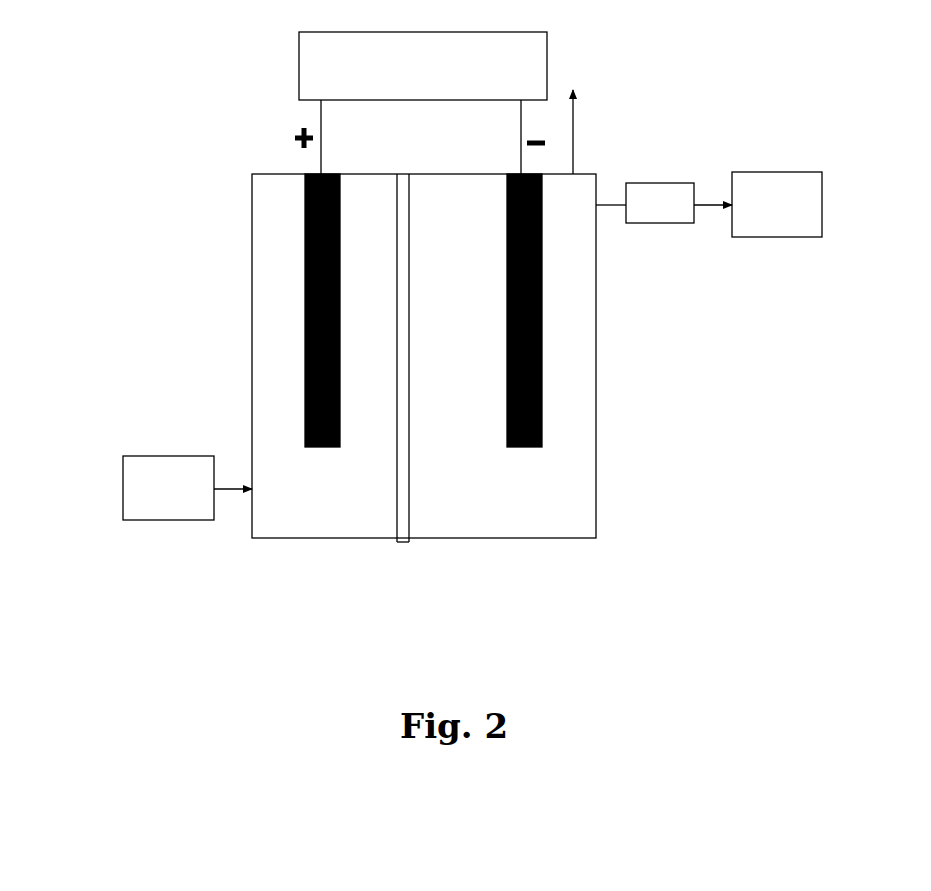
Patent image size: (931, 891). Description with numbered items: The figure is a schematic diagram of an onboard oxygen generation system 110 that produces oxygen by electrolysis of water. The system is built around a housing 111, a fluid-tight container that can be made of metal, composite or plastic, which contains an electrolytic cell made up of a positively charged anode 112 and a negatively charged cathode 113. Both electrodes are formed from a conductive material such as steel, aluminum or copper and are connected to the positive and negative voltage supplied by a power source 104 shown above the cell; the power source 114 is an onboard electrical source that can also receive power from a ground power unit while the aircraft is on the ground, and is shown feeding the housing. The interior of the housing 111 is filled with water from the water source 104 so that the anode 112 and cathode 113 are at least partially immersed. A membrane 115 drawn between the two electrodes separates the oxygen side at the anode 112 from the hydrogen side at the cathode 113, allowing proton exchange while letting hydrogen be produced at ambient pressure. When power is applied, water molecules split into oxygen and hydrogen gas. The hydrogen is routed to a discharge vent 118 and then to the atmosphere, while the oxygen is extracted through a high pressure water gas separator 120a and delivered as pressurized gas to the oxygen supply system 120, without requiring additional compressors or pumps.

The water source 104 is at (421, 103).
The oxygen generation system 110 is at (152, 120).
The housing 111 is at (252, 372).
The anode 112 is at (305, 232).
The cathode 113 is at (542, 241).
The power source 114 is at (187, 488).
The membrane 115 is at (408, 518).
The discharge vent 118 is at (598, 132).
The high pressure water gas separator 120a is at (664, 203).
The oxygen supply system 120 is at (777, 204).